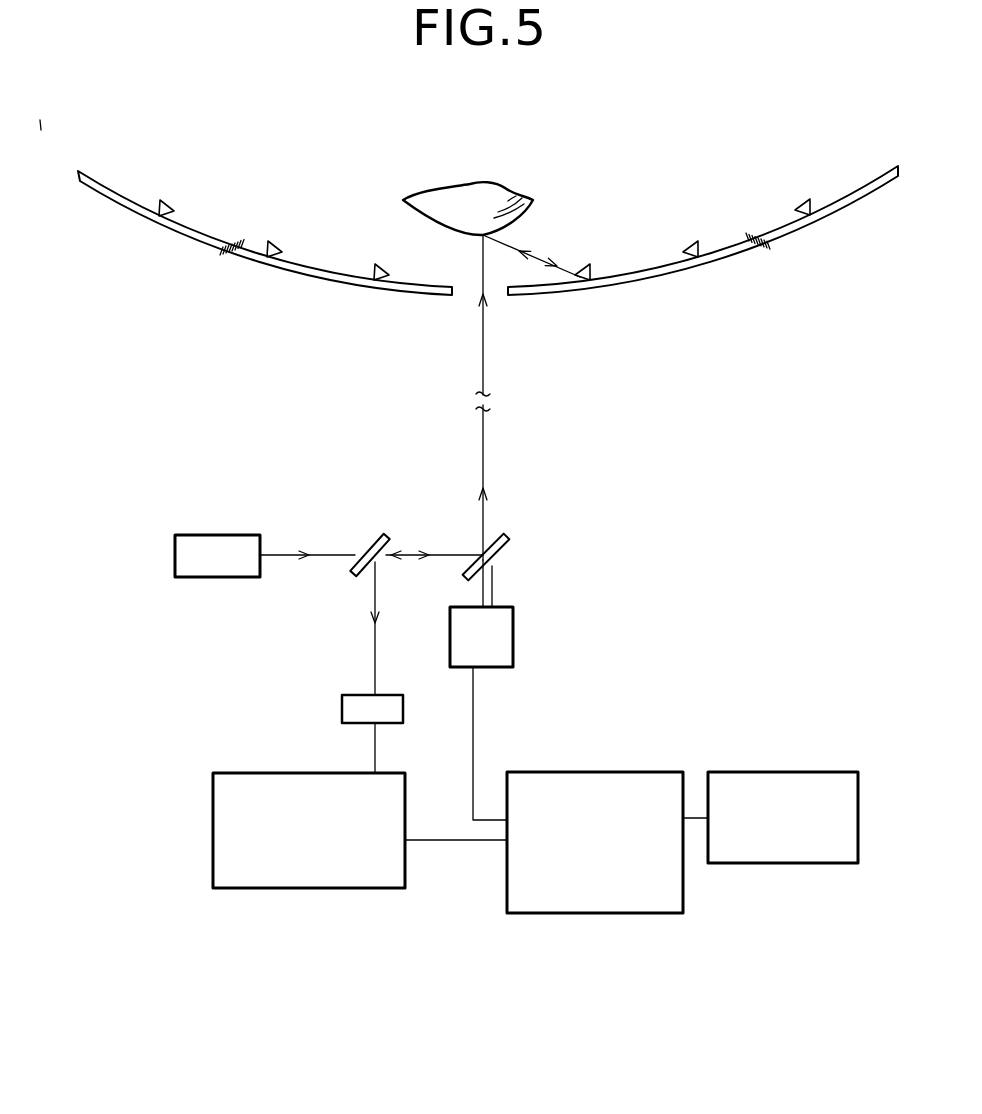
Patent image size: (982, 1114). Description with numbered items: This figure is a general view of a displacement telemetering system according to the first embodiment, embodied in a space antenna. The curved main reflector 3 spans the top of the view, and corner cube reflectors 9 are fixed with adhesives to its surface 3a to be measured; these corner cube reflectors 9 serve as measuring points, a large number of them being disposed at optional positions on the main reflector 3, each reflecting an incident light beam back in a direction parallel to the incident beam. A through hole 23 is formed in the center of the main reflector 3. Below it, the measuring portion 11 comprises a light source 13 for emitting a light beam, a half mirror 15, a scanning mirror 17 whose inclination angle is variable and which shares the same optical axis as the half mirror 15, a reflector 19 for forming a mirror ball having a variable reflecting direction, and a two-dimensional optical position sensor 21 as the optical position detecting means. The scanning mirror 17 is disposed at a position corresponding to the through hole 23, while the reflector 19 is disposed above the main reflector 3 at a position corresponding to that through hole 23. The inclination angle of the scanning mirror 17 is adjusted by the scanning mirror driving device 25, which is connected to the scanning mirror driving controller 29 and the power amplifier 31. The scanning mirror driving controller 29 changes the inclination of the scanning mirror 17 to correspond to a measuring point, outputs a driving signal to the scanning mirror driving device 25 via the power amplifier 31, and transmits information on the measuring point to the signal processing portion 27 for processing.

The main reflector 3 is at (821, 187).
The surface of the main reflector 3a is at (748, 236).
The corner cube reflectors 9 is at (686, 251).
The measuring portion 11 is at (204, 577).
The light source 13 is at (217, 594).
The half mirror 15 is at (366, 548).
The scanning mirror 17 is at (506, 545).
The reflector 19 is at (420, 216).
The two-dimensional optical position sensor 21 is at (342, 702).
The through hole 23 is at (470, 293).
The scanning mirror driving device 25 is at (514, 631).
The signal processing portion 27 is at (213, 822).
The scanning mirror driving controller 29 is at (618, 772).
The power amplifier 31 is at (793, 772).